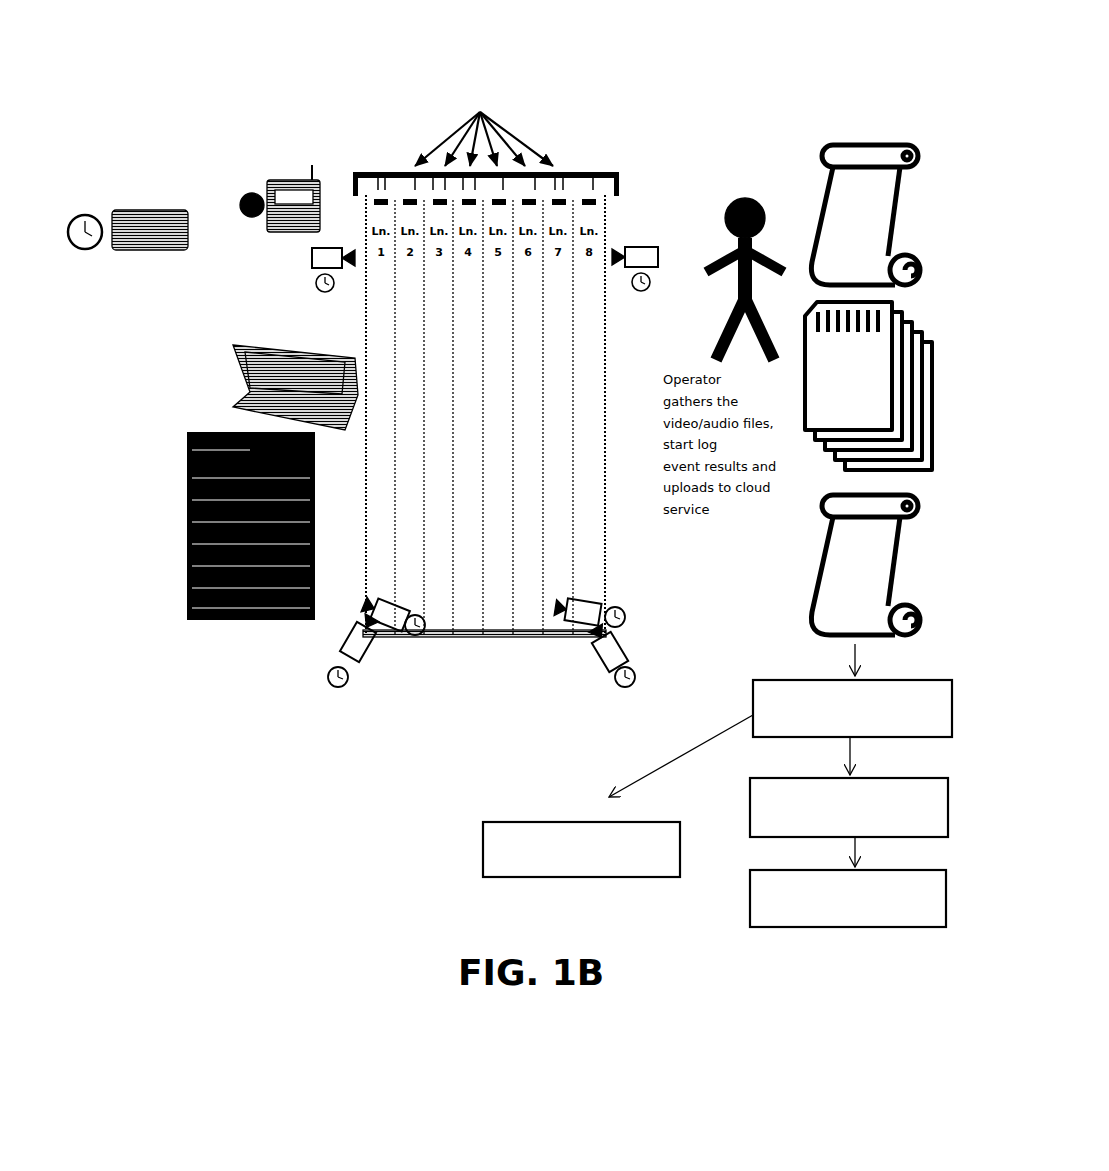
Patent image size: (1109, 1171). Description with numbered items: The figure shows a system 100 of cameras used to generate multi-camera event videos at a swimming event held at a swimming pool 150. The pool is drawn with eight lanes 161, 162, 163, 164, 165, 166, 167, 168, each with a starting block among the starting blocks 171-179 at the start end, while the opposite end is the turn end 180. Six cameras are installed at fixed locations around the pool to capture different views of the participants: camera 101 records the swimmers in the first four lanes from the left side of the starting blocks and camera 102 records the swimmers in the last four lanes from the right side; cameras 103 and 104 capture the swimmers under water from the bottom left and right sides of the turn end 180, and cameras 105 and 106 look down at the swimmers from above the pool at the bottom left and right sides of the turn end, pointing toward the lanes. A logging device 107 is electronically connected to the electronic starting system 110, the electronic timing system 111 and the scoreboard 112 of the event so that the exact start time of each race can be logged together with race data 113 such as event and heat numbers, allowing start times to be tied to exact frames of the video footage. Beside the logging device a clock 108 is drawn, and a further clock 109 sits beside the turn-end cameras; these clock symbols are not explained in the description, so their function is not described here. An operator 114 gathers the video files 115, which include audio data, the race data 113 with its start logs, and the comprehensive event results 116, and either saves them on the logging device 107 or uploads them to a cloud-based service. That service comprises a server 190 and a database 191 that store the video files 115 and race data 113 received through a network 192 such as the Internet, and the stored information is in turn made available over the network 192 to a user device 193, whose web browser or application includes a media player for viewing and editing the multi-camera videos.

The system 100 is at (810, 62).
The camera 101 is at (310, 262).
The camera 102 is at (660, 248).
The camera 103 is at (372, 610).
The camera 104 is at (616, 606).
The camera 105 is at (335, 650).
The camera 106 is at (628, 650).
The logging device 107 is at (160, 252).
The clock 108 is at (95, 250).
The camera clock 109 is at (410, 640).
The electronic starting system 110 is at (290, 180).
The electronic timing system 111 is at (250, 365).
The scoreboard 112 is at (187, 486).
The race data 113 is at (918, 205).
The operator 114 is at (745, 197).
The video files 115 is at (935, 360).
The event results 116 is at (902, 562).
The swimming pool 150 is at (618, 173).
The lane 161 is at (382, 311).
The lane 162 is at (411, 331).
The lane 163 is at (443, 453).
The lane 164 is at (472, 434).
The lane 165 is at (502, 403).
The lane 166 is at (530, 380).
The lane 167 is at (555, 352).
The lane 168 is at (596, 327).
The starting block 171 is at (383, 168).
The starting block 179 is at (585, 168).
The turn end 180 is at (474, 662).
The server 190 is at (849, 807).
The database 191 is at (848, 898).
The network 192 is at (852, 708).
The user device 193 is at (581, 849).